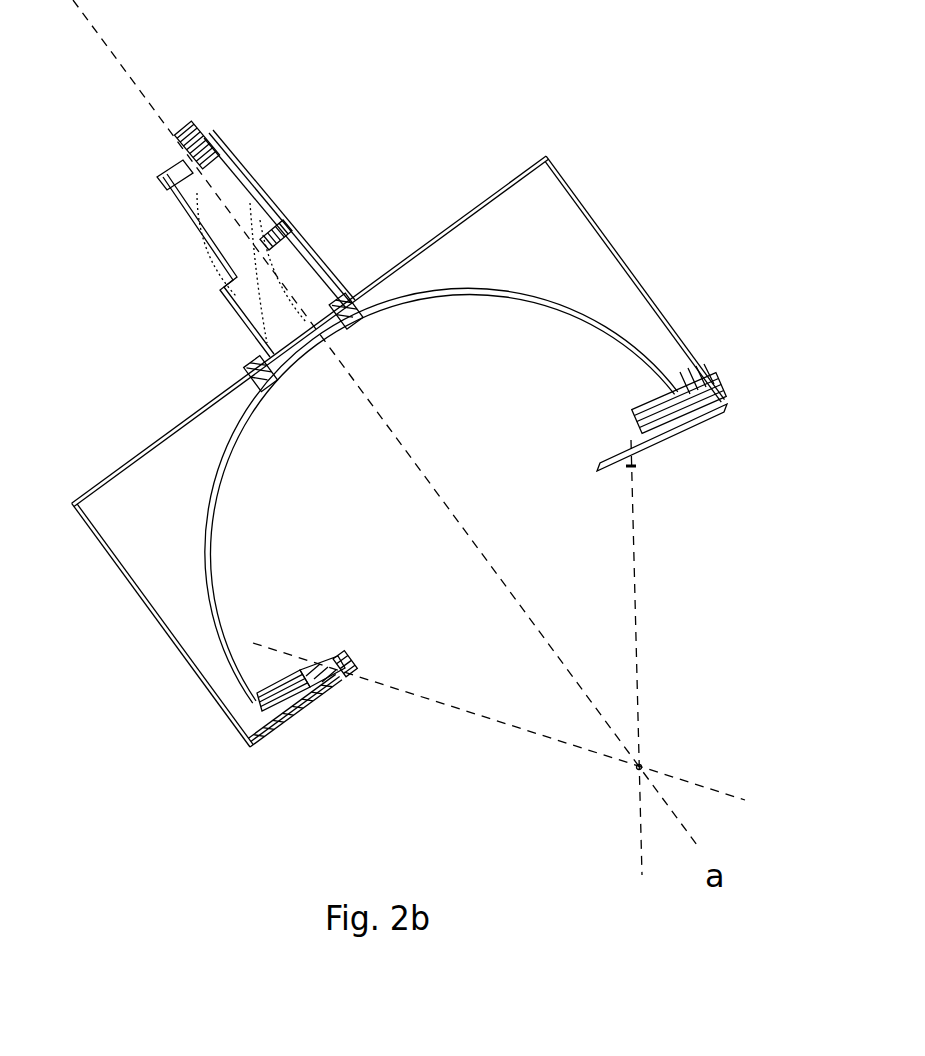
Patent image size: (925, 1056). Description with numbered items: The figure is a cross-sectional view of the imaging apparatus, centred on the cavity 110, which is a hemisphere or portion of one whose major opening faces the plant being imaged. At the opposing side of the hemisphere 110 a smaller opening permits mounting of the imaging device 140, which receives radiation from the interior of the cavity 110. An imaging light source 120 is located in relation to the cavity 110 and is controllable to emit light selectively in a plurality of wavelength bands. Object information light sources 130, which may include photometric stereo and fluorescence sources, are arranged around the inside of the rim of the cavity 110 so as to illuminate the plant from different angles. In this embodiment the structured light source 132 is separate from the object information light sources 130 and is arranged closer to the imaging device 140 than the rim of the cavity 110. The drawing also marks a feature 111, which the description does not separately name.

The cavity 110 is at (462, 290).
The rotation axis point 111 is at (640, 765).
The imaging light source 120 is at (692, 378).
The object information light source 130 is at (631, 474).
The structured light source 132 is at (247, 408).
The imaging device 140 is at (210, 150).